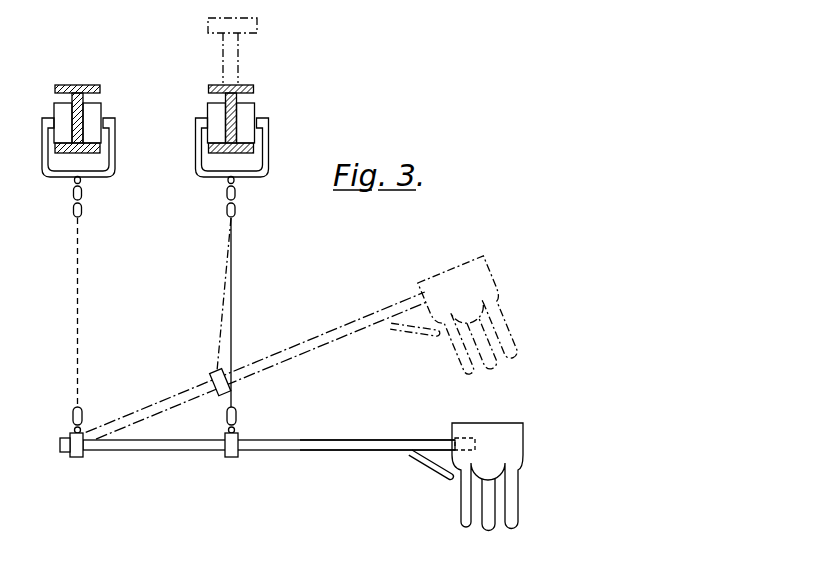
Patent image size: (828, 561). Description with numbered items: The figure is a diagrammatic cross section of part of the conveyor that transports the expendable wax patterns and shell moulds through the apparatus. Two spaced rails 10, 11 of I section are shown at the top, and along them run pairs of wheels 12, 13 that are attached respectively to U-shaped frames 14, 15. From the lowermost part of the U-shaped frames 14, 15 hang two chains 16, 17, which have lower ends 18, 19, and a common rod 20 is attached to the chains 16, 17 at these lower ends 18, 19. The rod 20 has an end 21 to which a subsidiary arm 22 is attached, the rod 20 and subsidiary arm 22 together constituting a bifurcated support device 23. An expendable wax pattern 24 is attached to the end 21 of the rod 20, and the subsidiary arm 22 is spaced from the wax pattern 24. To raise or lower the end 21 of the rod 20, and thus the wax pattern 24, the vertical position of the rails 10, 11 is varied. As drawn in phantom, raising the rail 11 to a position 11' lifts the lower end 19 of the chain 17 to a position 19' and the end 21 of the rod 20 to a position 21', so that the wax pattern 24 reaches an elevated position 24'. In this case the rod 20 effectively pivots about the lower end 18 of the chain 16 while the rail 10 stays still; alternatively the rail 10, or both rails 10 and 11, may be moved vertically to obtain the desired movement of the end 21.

The rail 10 is at (75, 87).
The rail 11 is at (250, 114).
The raised position of rail 11' is at (251, 50).
The pair of wheels 12 is at (62, 111).
The pair of wheels 13 is at (213, 112).
The U-shaped frame 14 is at (47, 171).
The U-shaped frame 15 is at (277, 148).
The chain 16 is at (73, 208).
The chain 17 is at (235, 294).
The lower end of chain 18 is at (71, 453).
The lower end of chain 19 is at (250, 432).
The raised position of chain lower end 19' is at (208, 373).
The common rod 20 is at (166, 449).
The end of rod 21 is at (377, 425).
The raised position of rod end 21' is at (257, 367).
The subsidiary arm 22 is at (427, 459).
The bifurcated support device 23 is at (352, 452).
The expendable wax pattern 24 is at (487, 457).
The elevated position of wax pattern 24' is at (455, 325).